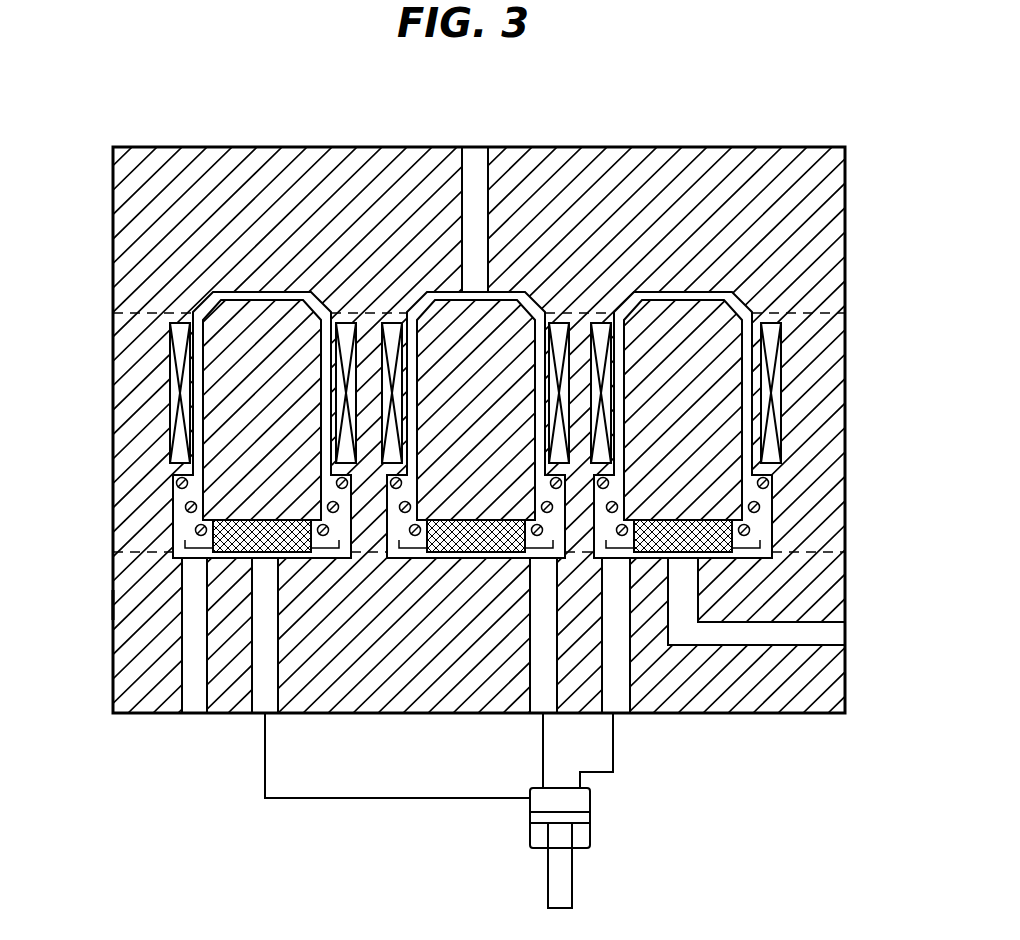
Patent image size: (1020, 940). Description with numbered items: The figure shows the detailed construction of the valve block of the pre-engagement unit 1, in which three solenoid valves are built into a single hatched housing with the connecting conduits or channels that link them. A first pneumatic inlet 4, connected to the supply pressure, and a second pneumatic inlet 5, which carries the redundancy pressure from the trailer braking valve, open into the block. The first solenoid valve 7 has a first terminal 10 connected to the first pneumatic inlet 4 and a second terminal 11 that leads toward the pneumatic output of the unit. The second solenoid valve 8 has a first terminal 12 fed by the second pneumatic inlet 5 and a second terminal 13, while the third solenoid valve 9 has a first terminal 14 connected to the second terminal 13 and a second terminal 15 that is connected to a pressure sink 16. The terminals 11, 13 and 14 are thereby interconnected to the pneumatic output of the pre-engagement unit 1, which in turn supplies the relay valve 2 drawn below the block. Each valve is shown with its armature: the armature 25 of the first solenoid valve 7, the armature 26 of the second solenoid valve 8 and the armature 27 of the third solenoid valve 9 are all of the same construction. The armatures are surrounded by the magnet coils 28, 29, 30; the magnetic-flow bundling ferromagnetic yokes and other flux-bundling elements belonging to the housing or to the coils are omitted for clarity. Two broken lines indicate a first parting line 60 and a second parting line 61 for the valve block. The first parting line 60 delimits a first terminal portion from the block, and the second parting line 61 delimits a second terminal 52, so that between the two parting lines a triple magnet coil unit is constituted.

The pre-engagement unit 1 is at (688, 79).
The relay valve 2 is at (636, 846).
The first pneumatic inlet 4 is at (830, 634).
The second pneumatic inlet 5 is at (477, 165).
The first solenoid valve 7 is at (712, 257).
The second solenoid valve 8 is at (425, 262).
The third solenoid valve 9 is at (238, 262).
The first terminal 10 is at (687, 578).
The second terminal 11 is at (617, 587).
The first terminal 12 is at (470, 273).
The second terminal 13 is at (542, 586).
The first terminal 14 is at (263, 580).
The second terminal 15 is at (197, 578).
The pressure sink 16 is at (195, 700).
The armature 25 is at (671, 422).
The armature 26 is at (462, 422).
The armature 27 is at (251, 422).
The magnet coil 28 is at (768, 346).
The magnet coil 29 is at (558, 322).
The magnet coil 30 is at (345, 322).
The second terminal 52 is at (135, 603).
The first parting line 60 is at (146, 313).
The second parting line 61 is at (140, 552).